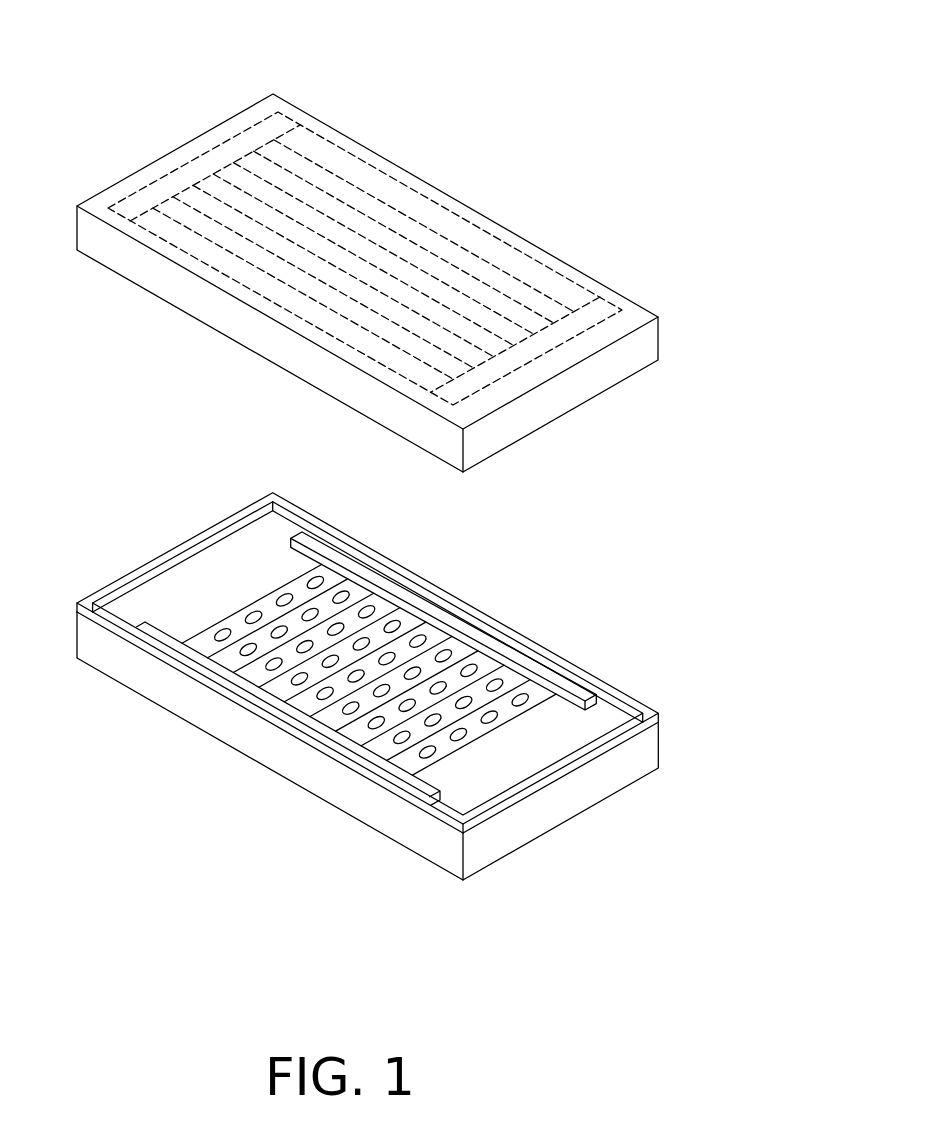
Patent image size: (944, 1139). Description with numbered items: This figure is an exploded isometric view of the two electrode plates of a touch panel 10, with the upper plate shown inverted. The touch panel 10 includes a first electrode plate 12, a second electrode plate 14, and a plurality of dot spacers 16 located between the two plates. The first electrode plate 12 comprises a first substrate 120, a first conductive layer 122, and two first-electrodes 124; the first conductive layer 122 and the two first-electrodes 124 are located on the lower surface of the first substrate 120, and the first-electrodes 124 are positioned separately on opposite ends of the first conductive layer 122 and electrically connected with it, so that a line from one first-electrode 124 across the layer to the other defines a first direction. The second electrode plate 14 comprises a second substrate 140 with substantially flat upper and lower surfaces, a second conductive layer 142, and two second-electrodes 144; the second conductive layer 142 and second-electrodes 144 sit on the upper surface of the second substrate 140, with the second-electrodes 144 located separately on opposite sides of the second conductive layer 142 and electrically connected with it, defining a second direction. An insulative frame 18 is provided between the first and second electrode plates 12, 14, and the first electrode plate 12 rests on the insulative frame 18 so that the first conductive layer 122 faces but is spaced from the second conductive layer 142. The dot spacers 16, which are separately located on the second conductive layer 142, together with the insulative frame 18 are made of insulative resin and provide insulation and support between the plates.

The touch panel 10 is at (374, 30).
The first electrode plate 12 is at (571, 237).
The first substrate 120 is at (642, 345).
The first conductive layer 122 is at (380, 210).
The first-electrodes 124 is at (205, 160).
The second electrode plate 14 is at (549, 857).
The second substrate 140 is at (332, 788).
The insulative frame 18 is at (255, 707).
The second conductive layer 142 is at (248, 605).
The second-electrodes 144 is at (418, 605).
The dot spacers 16 is at (520, 694).